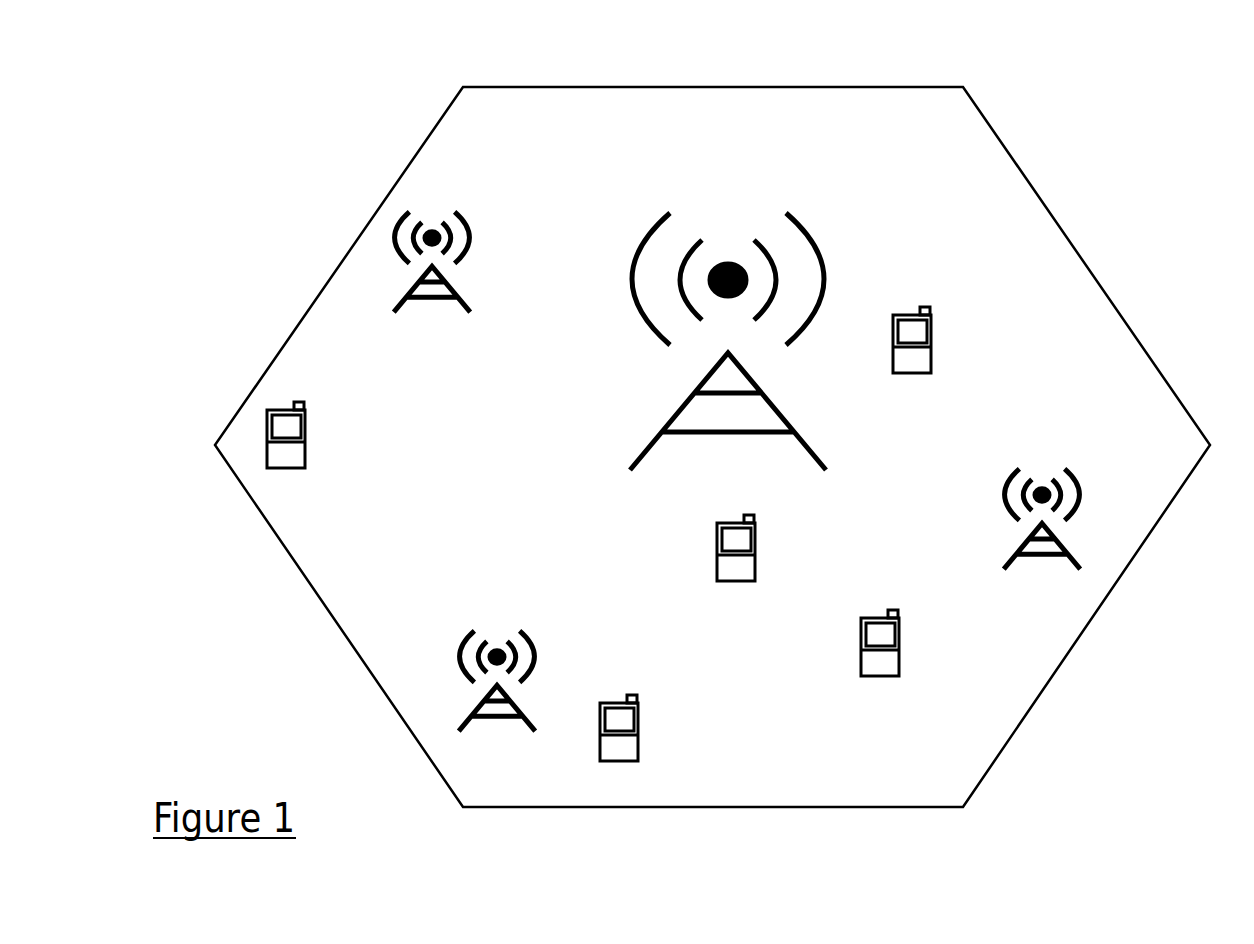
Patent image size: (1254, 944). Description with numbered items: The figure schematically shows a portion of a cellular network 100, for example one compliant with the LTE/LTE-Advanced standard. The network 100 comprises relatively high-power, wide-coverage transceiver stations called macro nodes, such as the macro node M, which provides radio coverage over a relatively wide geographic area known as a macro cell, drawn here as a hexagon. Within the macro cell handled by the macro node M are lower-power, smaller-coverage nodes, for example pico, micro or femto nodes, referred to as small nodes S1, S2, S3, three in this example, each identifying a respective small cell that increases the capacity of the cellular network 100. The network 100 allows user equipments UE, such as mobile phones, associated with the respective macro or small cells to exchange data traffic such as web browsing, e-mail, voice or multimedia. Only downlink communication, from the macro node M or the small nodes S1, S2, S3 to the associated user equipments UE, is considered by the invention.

The cellular network 100 is at (1150, 214).
The macro node M is at (803, 215).
The small node S1 is at (455, 215).
The small node S2 is at (522, 633).
The small node S3 is at (1064, 471).
The user equipment UE is at (638, 525).